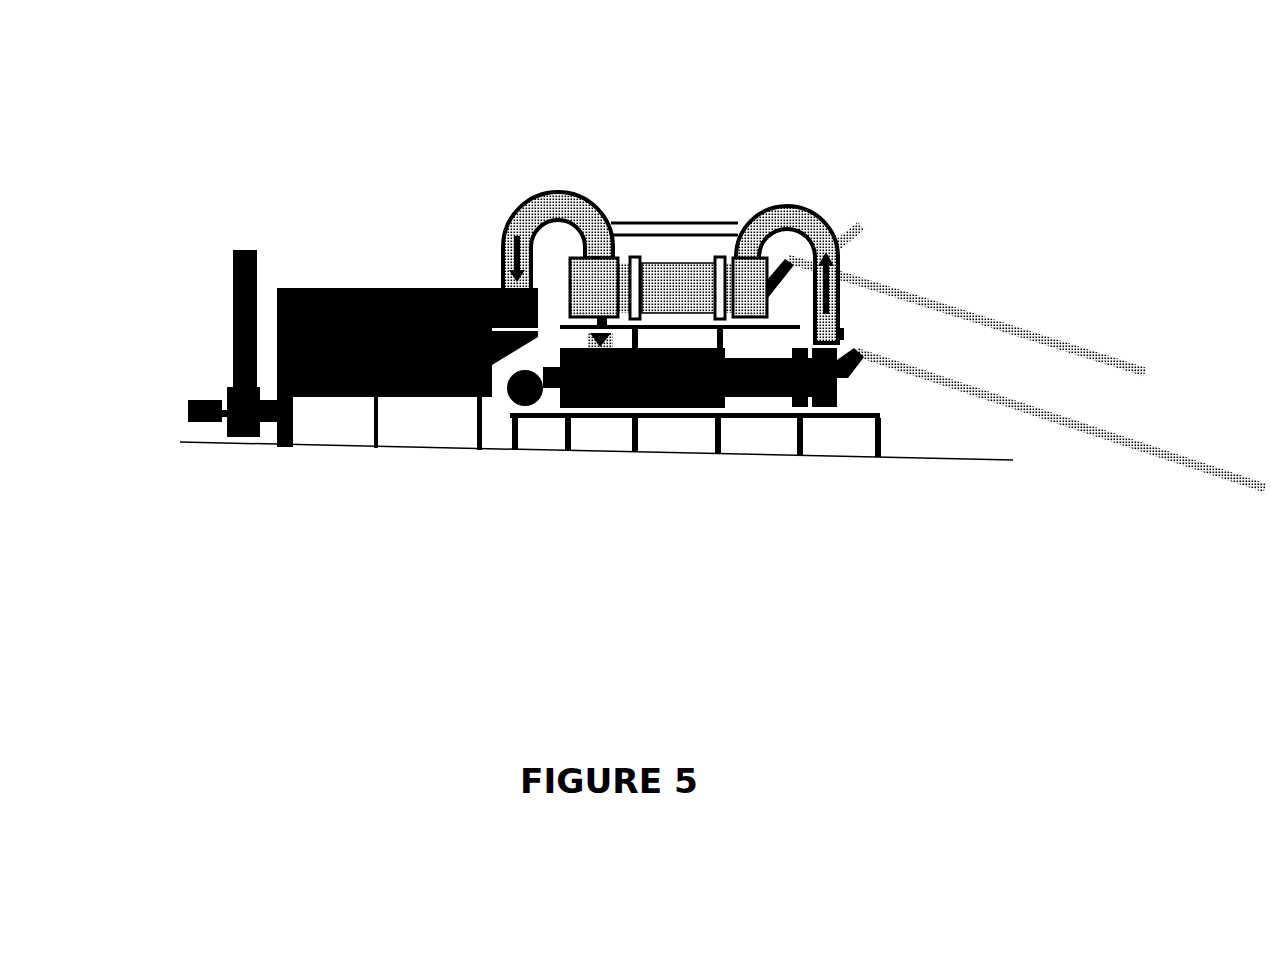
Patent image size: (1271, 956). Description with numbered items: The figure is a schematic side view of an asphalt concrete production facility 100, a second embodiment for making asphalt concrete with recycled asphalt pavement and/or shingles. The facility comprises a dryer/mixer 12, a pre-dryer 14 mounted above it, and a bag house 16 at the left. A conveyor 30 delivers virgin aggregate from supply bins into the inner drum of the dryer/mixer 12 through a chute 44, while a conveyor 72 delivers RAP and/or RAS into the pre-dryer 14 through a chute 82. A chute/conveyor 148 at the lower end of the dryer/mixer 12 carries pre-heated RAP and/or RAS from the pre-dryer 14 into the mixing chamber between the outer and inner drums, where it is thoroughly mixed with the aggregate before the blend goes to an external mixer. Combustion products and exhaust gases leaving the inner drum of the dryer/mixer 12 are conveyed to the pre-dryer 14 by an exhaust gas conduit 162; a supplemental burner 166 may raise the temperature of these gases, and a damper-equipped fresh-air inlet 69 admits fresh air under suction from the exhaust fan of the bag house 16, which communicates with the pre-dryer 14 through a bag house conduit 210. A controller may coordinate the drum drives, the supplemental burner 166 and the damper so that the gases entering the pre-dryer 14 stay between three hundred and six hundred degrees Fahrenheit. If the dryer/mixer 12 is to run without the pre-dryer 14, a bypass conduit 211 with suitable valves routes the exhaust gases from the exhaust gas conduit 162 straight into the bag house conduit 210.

The asphalt concrete production facility 100 is at (273, 132).
The bag house 16 is at (360, 289).
The dryer/mixer 12 is at (690, 410).
The pre-dryer 14 is at (678, 262).
The bag house conduit 210 is at (570, 183).
The bypass conduit 211 is at (667, 223).
The exhaust gas conduit 162 is at (813, 207).
The supplemental burner 166 is at (868, 228).
The chute 82 is at (789, 278).
The conveyor 72 is at (977, 310).
The fresh-air inlet 69 is at (846, 338).
The chute 44 is at (853, 375).
The conveyor 30 is at (1080, 427).
The chute/conveyor 148 is at (588, 334).